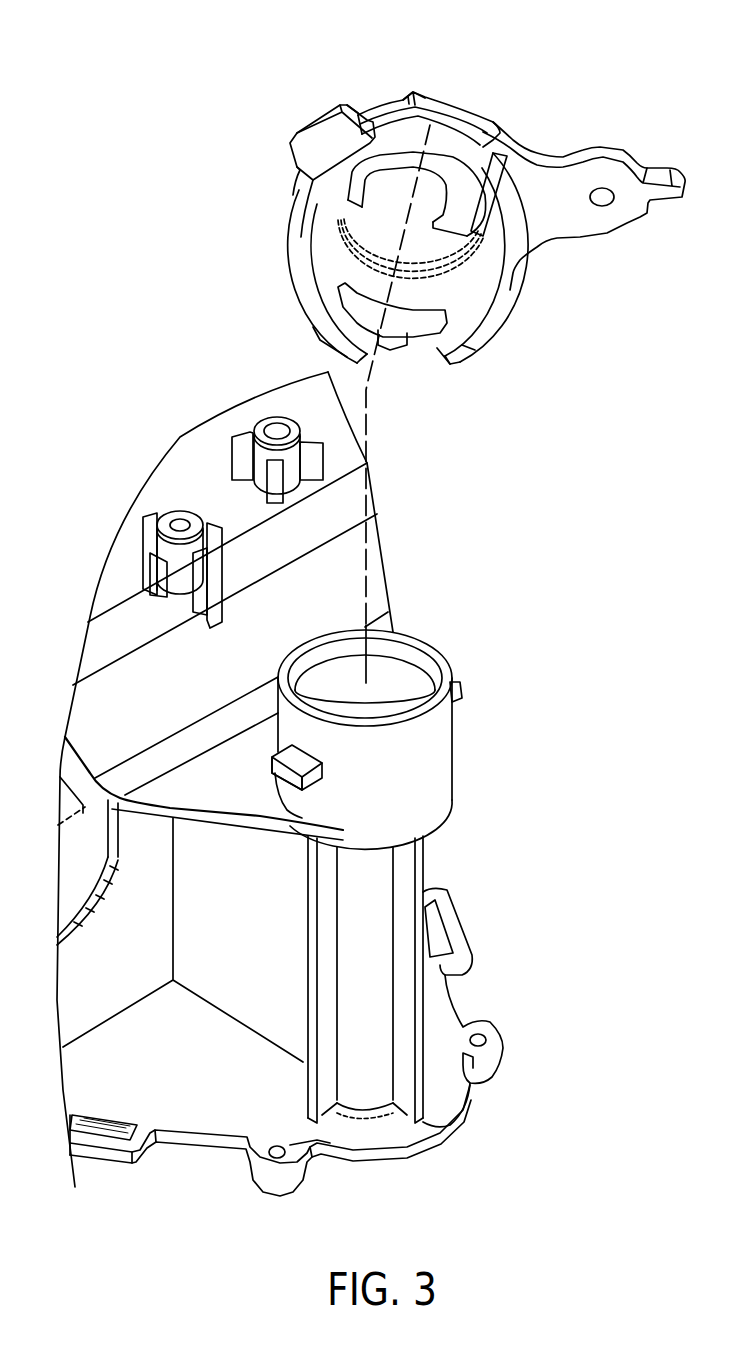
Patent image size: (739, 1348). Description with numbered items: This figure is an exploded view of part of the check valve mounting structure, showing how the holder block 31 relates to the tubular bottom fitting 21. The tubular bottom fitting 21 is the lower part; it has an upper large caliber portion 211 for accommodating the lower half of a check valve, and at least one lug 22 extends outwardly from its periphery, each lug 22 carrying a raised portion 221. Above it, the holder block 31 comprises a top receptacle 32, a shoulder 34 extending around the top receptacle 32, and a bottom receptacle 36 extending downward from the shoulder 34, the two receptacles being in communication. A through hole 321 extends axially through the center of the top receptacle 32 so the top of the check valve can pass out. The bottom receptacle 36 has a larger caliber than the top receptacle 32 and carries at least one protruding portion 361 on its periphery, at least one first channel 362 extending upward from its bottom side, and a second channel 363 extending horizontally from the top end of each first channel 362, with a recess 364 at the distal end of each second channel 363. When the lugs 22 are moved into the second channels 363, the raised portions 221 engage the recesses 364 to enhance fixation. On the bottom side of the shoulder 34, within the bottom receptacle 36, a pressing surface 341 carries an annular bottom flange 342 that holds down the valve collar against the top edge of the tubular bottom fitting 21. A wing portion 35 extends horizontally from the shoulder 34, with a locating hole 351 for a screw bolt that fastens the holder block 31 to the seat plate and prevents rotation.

The tubular bottom fitting 21 is at (358, 950).
The upper large caliber portion 211 is at (442, 790).
The lug 22 is at (450, 683).
The raised portion 221 is at (298, 792).
The holder block 31 is at (442, 345).
The top receptacle 32 is at (477, 115).
The through hole 321 is at (430, 125).
The shoulder 34 is at (372, 108).
The wing portion 35 is at (584, 185).
The locating hole 351 is at (603, 207).
The bottom receptacle 36 is at (513, 287).
The protruding portion 361 is at (325, 115).
The first channel 362 is at (413, 350).
The second channel 363 is at (330, 344).
The recess 364 is at (337, 305).
The pressing surface 341 is at (470, 290).
The annular bottom flange 342 is at (462, 263).